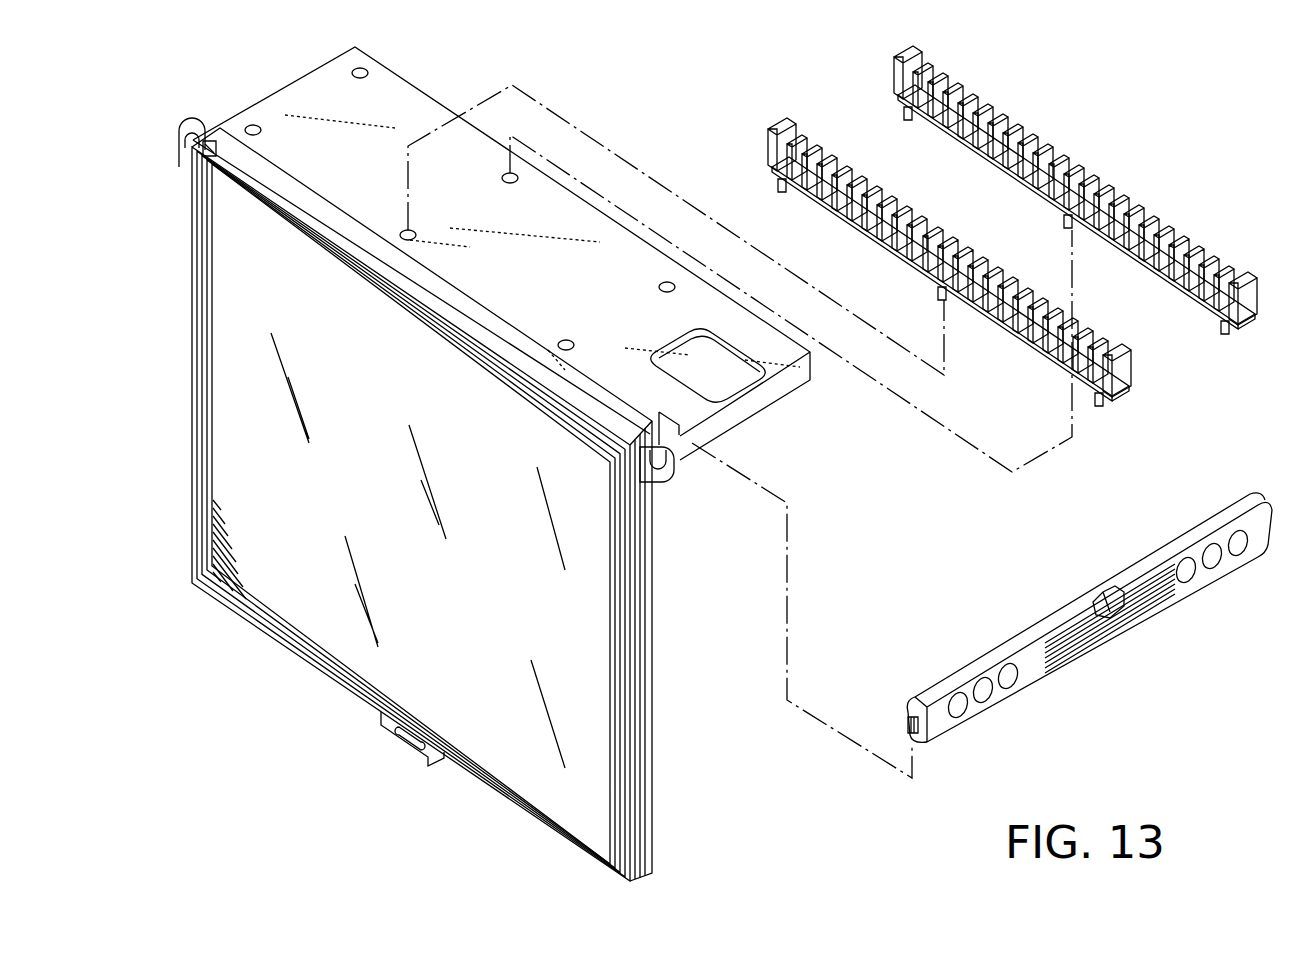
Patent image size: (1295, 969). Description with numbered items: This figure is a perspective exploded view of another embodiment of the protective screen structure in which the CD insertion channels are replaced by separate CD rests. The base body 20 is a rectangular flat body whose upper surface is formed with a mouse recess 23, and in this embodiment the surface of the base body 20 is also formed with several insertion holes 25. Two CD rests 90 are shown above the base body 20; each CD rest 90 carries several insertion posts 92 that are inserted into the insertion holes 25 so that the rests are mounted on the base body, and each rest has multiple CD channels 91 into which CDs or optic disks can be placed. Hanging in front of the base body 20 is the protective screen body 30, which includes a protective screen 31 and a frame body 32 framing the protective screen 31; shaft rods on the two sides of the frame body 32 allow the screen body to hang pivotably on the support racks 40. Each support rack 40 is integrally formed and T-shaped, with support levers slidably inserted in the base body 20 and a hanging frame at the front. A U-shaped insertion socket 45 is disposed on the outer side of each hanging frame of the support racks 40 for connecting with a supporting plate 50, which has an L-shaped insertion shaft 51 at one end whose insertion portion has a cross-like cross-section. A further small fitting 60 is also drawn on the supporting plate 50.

The base body 20 is at (420, 106).
The mouse recess 23 is at (722, 378).
The insertion holes 25 is at (353, 72).
The protective screen body 30 is at (322, 737).
The protective screen 31 is at (315, 666).
The frame body 32 is at (536, 782).
The support rack 40 is at (203, 160).
The U-shaped insertion socket 45 is at (179, 152).
The supporting plate 50 is at (1177, 595).
The L-shaped insertion shaft 51 is at (908, 730).
The latch clip 60 is at (1115, 602).
The CD rest 90 is at (1140, 386).
The CD channels 91 is at (1092, 183).
The insertion posts 92 is at (904, 110).